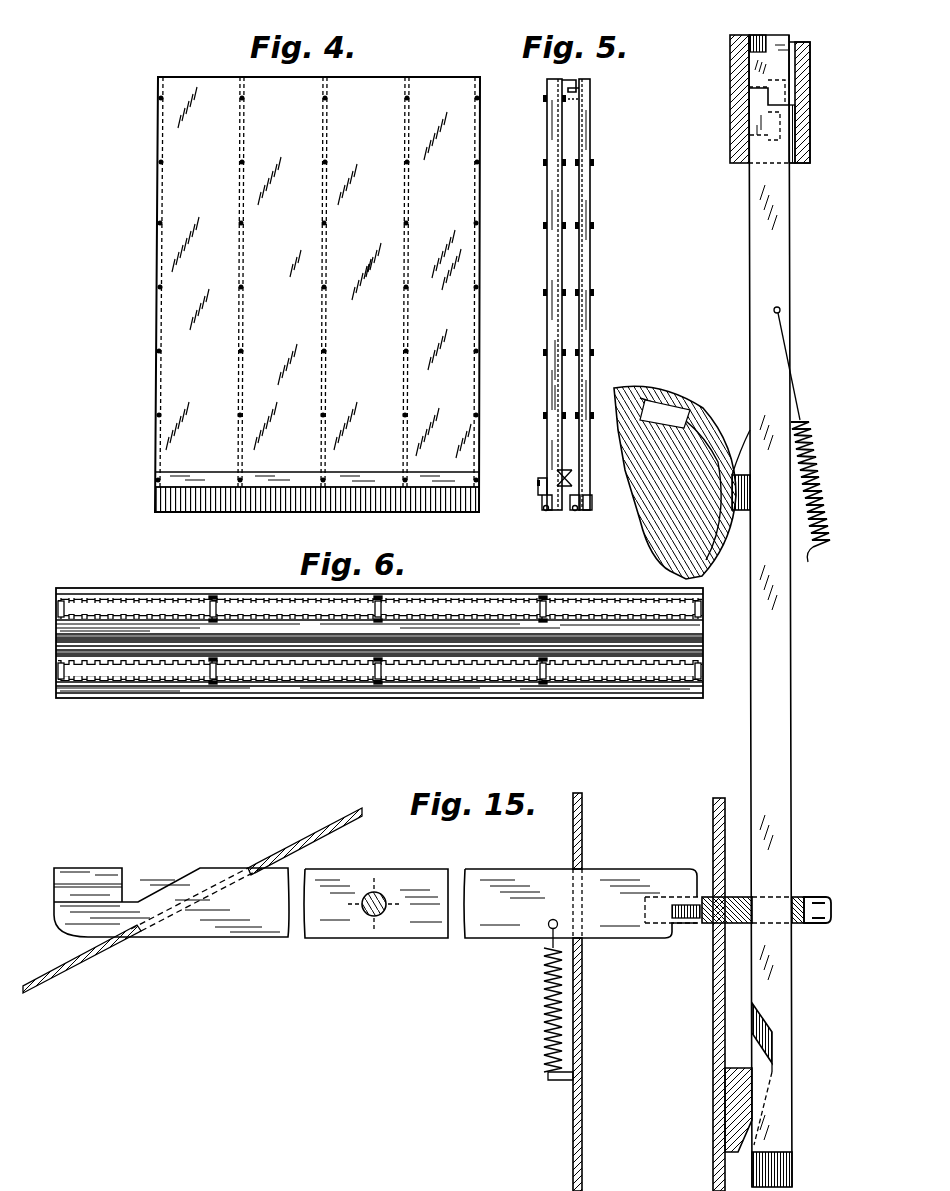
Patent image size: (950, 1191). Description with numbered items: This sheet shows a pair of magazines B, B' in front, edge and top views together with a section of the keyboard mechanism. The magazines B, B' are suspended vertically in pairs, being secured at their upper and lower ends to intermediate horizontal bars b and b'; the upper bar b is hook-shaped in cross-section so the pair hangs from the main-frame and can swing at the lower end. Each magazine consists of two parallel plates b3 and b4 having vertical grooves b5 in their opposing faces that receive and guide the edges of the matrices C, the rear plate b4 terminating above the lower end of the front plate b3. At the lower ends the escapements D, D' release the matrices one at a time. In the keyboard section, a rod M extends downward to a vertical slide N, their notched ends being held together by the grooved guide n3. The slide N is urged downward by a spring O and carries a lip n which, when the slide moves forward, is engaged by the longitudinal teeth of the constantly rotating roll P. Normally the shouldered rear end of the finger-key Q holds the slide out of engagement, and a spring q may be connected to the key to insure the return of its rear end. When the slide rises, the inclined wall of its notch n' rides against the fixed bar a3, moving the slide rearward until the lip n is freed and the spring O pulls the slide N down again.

In FIG. 4, the magazine B is at (317, 294).
In FIG. 5, the magazine B is at (539, 294).
In FIG. 5, the magazine B' is at (602, 294).
In FIG. 4, the escapement D is at (317, 514).
In FIG. 5, the escapement D is at (528, 497).
In FIG. 5, the escapement D' is at (582, 519).
In FIG. 5, the upper bar b is at (588, 106).
In FIG. 5, the lower bar b' is at (545, 462).
In FIG. 5, the front plate b3 is at (548, 400).
In FIG. 6, the front plate b3 is at (487, 598).
In FIG. 5, the rear plate b4 is at (560, 330).
In FIG. 6, the rear plate b4 is at (580, 614).
In FIG. 6, the vertical grooves b5 is at (460, 674).
In FIG. 6, the matrix C is at (475, 690).
In FIG. 15, the rod M is at (796, 46).
In FIG. 15, the grooved guide n3 is at (813, 102).
In FIG. 15, the slide N is at (792, 705).
In FIG. 15, the roll P is at (665, 420).
In FIG. 15, the lip n is at (754, 470).
In FIG. 15, the spring O is at (806, 895).
In FIG. 15, the finger-key Q is at (514, 930).
In FIG. 15, the spring q is at (545, 1012).
In FIG. 15, the notch n' is at (791, 1074).
In FIG. 15, the fixed bar a3 is at (725, 1118).